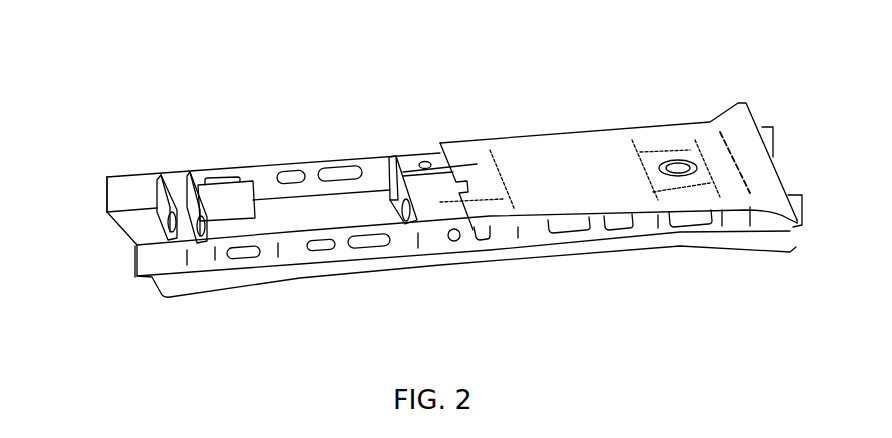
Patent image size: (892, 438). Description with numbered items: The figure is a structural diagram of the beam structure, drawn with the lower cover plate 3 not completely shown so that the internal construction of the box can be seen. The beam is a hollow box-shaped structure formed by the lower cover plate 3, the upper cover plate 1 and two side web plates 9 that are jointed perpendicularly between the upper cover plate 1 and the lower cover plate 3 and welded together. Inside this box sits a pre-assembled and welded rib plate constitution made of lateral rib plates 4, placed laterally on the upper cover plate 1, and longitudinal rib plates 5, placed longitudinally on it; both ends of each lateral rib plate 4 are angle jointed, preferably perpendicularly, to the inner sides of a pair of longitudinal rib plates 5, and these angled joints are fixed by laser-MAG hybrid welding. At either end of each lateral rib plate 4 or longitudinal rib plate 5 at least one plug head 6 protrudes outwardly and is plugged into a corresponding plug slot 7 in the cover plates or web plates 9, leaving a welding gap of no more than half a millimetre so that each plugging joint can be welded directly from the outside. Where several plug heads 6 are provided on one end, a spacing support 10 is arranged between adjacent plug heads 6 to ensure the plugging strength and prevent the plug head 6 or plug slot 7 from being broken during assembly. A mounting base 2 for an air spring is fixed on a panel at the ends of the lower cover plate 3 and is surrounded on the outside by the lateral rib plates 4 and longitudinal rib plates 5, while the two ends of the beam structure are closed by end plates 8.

The upper cover plate 1 is at (530, 257).
The mounting base 2 is at (680, 163).
The lower cover plate 3 is at (563, 172).
The lateral rib plate 4 is at (227, 200).
The longitudinal rib plate 5 is at (196, 200).
The plug head 6 is at (417, 168).
The plug slot 7 is at (467, 167).
The end plate 8 is at (163, 197).
The web plate 9 is at (122, 193).
The spacing support 10 is at (398, 188).